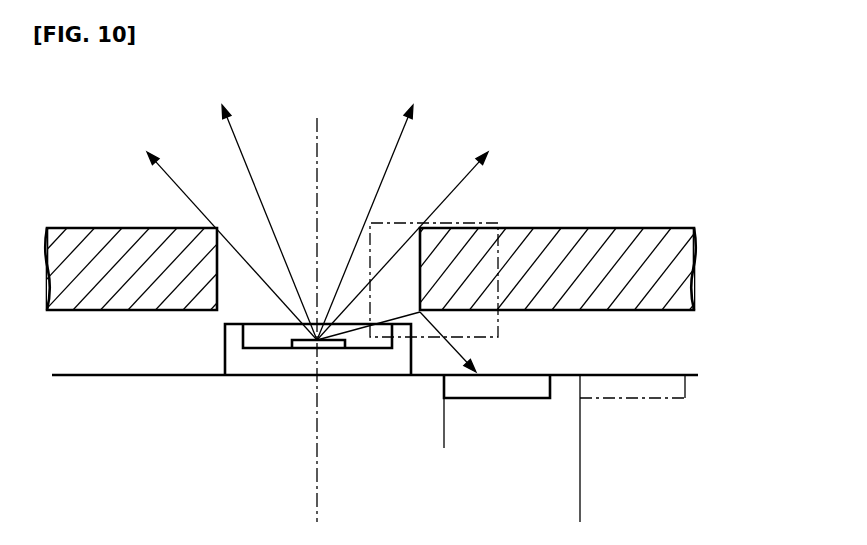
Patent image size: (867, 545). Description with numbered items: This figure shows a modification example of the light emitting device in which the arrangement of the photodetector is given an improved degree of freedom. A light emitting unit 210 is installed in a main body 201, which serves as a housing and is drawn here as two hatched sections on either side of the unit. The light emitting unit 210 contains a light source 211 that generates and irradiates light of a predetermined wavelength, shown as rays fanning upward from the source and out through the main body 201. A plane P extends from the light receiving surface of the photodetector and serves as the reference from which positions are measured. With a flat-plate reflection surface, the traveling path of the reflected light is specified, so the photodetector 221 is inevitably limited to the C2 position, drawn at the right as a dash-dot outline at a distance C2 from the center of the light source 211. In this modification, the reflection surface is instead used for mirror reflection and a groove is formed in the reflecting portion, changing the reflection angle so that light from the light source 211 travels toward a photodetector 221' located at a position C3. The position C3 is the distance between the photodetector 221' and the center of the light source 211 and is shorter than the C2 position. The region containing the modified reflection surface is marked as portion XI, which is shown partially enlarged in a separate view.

The main body 201 is at (118, 260).
The portion XI is at (492, 222).
The plane P is at (113, 375).
The light emitting unit 210 is at (232, 390).
The light source 211 is at (300, 349).
The photodetector 221' is at (530, 369).
The photodetector 221 is at (644, 423).
The position C3 is at (434, 443).
The C2 position C2 is at (570, 511).